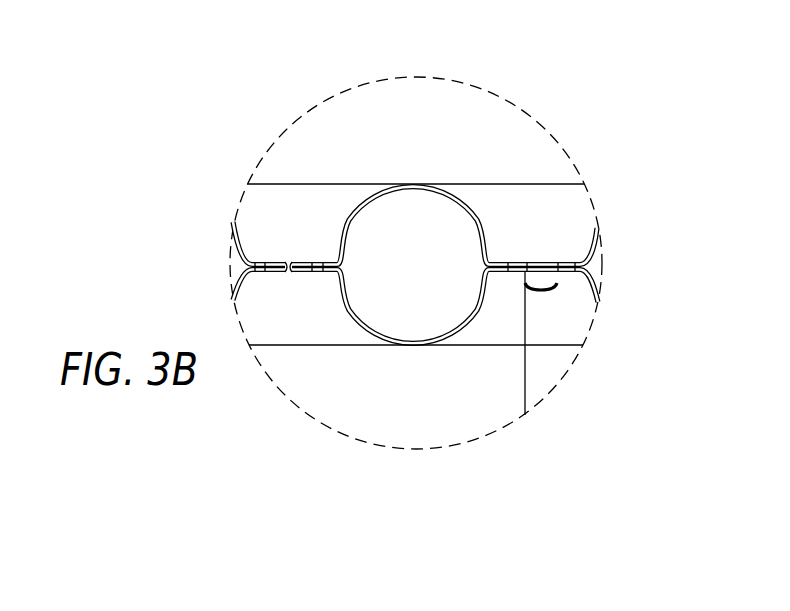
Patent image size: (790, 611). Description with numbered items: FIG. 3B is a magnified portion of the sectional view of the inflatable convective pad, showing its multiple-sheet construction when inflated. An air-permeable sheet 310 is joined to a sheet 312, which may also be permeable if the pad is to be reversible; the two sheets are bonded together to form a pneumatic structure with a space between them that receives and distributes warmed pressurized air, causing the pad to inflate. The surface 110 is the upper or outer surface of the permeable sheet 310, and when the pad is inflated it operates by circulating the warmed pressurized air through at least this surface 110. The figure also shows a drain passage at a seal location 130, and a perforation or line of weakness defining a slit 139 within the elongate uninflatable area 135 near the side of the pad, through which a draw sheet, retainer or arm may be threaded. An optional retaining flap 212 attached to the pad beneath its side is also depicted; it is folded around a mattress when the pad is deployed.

The upper surface 110 is at (528, 210).
The seal location 130 is at (287, 277).
The elongate uninflatable area 135 is at (542, 290).
The slit 139 is at (542, 260).
The retaining flap 212 is at (525, 371).
The permeable sheet 310 is at (415, 185).
The sheet 312 is at (415, 345).